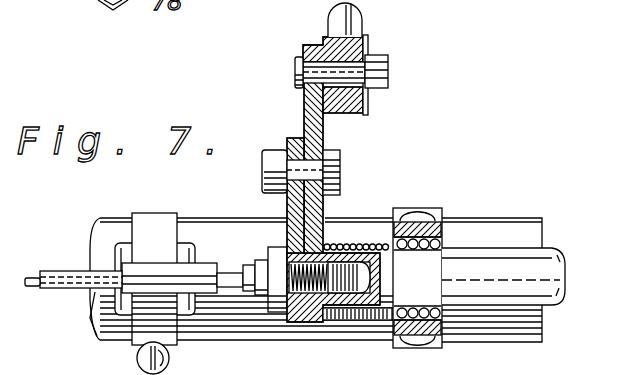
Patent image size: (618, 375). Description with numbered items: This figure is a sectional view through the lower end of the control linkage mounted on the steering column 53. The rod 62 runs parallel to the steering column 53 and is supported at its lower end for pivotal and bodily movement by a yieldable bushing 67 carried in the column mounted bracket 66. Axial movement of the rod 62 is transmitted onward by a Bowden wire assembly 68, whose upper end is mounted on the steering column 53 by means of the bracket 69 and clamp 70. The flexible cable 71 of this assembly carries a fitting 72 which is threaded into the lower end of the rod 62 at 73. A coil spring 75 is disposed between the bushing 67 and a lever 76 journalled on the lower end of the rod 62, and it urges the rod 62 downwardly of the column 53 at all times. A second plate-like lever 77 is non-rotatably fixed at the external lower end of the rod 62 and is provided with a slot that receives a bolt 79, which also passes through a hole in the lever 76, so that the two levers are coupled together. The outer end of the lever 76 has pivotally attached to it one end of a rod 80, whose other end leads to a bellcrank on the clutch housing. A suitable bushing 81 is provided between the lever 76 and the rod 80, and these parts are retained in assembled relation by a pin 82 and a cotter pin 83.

The steering column 53 is at (511, 222).
The rod 62 is at (478, 257).
The column mounted bracket 66 is at (436, 347).
The yieldable bushing 67 is at (393, 318).
The Bowden wire assembly 68 is at (70, 290).
The bracket 69 is at (122, 322).
The clamp 70 is at (173, 362).
The flexible cable 71 is at (44, 261).
The fitting 72 is at (263, 257).
The threaded connection 73 is at (310, 306).
The coil spring 75 is at (365, 242).
The lever 76 is at (325, 134).
The plate-like lever 77 is at (292, 197).
The bolt 79 is at (331, 162).
The rod 80 is at (348, 22).
The bushing 81 is at (329, 35).
The pin 82 is at (296, 72).
The cotter pin 83 is at (374, 88).